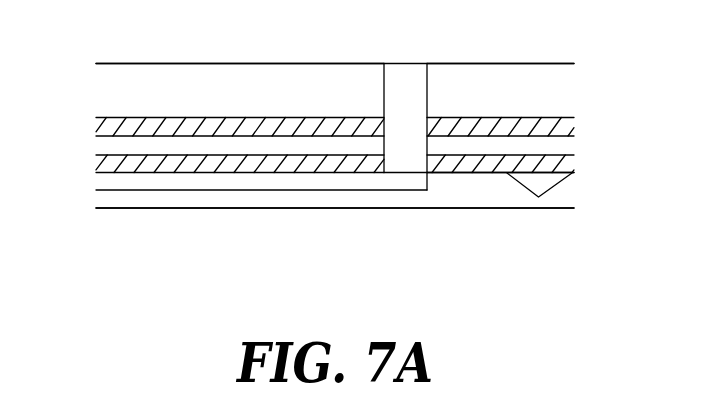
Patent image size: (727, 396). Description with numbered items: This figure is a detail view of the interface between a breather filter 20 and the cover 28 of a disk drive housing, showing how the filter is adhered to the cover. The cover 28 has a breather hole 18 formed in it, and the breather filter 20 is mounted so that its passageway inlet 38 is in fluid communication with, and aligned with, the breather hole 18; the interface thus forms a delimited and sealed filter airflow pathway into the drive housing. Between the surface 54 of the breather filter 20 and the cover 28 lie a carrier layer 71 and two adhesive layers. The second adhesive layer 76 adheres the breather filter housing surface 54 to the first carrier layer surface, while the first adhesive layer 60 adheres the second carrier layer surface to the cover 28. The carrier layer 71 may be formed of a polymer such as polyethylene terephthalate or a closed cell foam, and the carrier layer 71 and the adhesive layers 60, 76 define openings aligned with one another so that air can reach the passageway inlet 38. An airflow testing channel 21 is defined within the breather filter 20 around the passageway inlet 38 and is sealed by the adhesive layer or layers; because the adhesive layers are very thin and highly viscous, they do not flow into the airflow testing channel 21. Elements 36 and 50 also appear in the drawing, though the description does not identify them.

The cover 28 is at (240, 63).
The breather hole 18 is at (402, 71).
The first adhesive layer 60 is at (562, 128).
The carrier layer 71 is at (100, 150).
The second adhesive layer 76 is at (568, 165).
The airflow testing channel 21 is at (542, 188).
The intermediate layer 36 is at (260, 184).
The surface of the breather filter 54 is at (213, 169).
The passageway inlet 38 is at (397, 178).
The base substrate 50 is at (317, 267).
The breather filter 20 is at (536, 252).